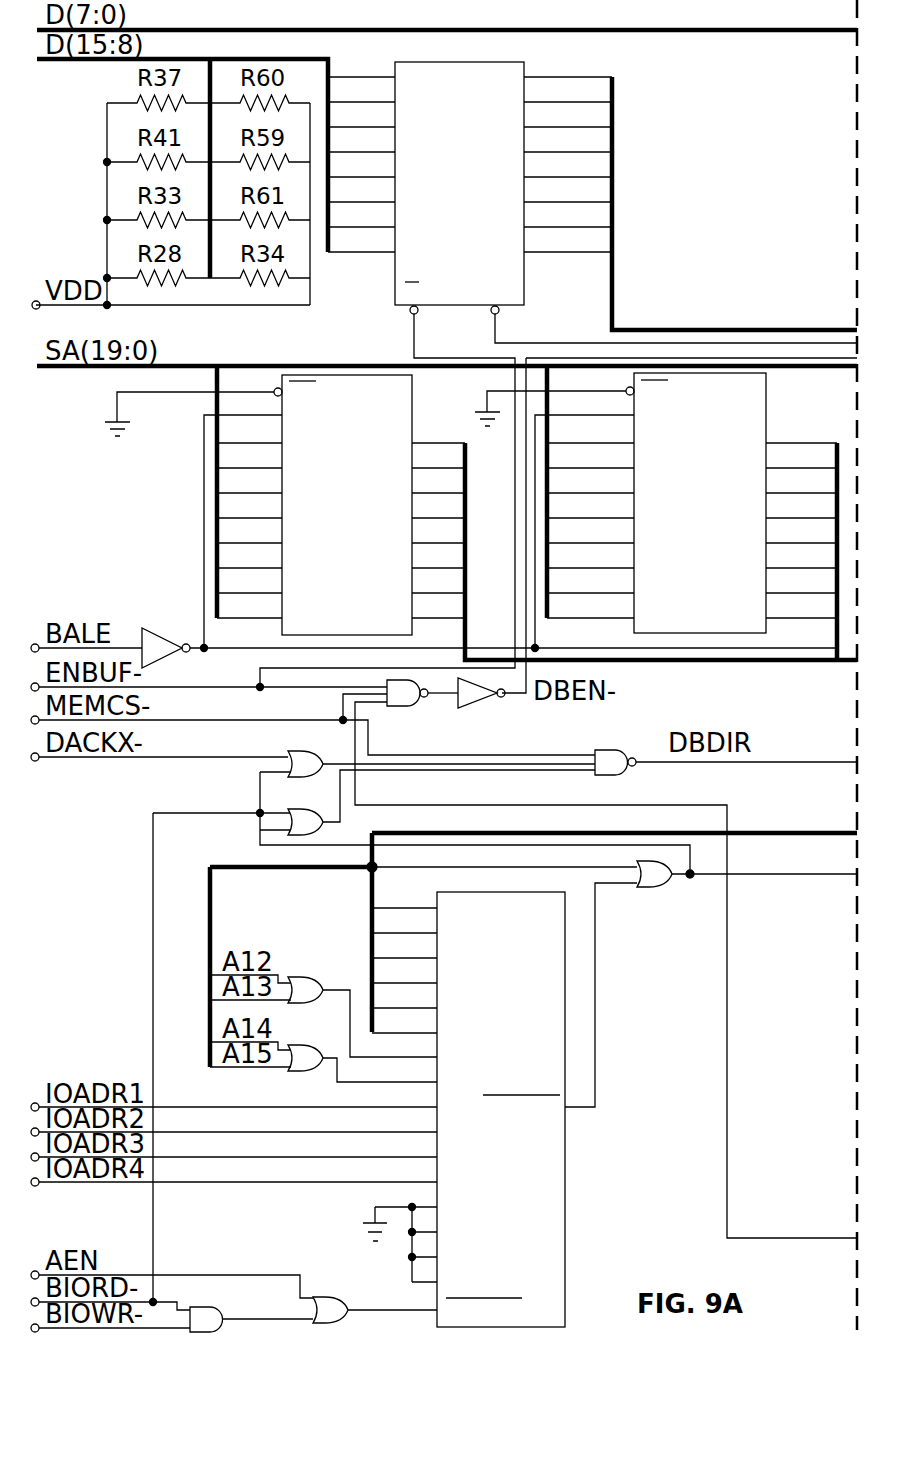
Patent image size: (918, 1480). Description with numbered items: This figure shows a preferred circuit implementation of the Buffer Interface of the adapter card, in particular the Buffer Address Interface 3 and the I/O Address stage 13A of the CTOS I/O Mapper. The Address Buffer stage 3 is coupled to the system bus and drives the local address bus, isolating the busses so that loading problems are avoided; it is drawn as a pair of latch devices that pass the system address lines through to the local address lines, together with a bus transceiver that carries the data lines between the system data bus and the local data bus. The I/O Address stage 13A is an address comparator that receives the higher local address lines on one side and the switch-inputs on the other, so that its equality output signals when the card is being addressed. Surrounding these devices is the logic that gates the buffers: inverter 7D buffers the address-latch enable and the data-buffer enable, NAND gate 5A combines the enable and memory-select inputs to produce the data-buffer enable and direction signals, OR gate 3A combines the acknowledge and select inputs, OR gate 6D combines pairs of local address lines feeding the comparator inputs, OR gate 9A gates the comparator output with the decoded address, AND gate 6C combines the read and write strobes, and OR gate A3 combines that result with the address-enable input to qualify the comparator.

The Address Buffer stage 3 is at (520, 286).
The I/O Address stage 13A is at (553, 1168).
The inverter 7D is at (324, 666).
The NAND gate 5A is at (511, 727).
The OR gate 3A is at (307, 778).
The OR gate 6D is at (310, 1009).
The OR gate 9A is at (656, 890).
The AND gate 6C is at (211, 1304).
The OR gate A3 is at (332, 1294).